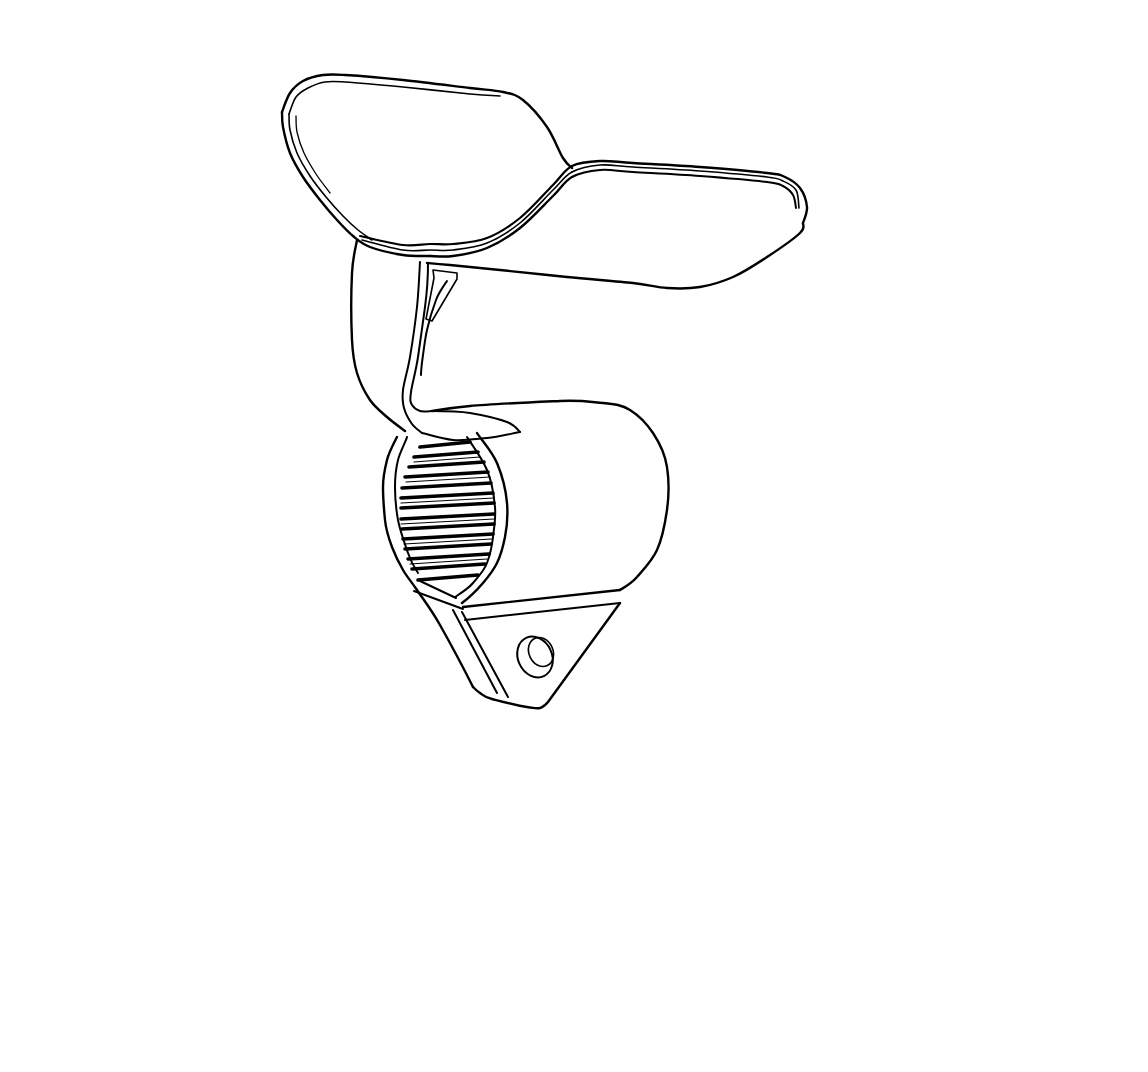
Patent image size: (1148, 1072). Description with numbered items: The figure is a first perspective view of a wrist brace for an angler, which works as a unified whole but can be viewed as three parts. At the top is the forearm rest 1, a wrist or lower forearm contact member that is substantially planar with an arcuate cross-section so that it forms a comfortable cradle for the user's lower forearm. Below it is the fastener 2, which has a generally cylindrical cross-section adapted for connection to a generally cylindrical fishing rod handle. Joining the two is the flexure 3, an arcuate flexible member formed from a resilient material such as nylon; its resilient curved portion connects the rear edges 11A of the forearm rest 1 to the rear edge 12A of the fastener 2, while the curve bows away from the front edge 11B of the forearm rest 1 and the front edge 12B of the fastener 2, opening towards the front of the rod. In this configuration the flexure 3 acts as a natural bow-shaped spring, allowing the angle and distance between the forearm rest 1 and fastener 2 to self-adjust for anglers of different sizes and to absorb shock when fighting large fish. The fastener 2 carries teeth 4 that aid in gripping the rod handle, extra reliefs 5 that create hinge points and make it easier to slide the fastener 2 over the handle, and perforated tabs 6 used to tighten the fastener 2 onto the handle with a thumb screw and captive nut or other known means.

The forearm rest 1 is at (588, 115).
The fastener 2 is at (360, 537).
The flexure 3 is at (307, 325).
The teeth 4 is at (423, 547).
The reliefs 5 is at (490, 460).
The perforated tabs 6 is at (587, 620).
The rear edges of forearm rest 11A is at (353, 232).
The front edge of forearm rest 11B is at (800, 232).
The rear edge of fastener 12A is at (390, 453).
The front edge of fastener 12B is at (640, 420).